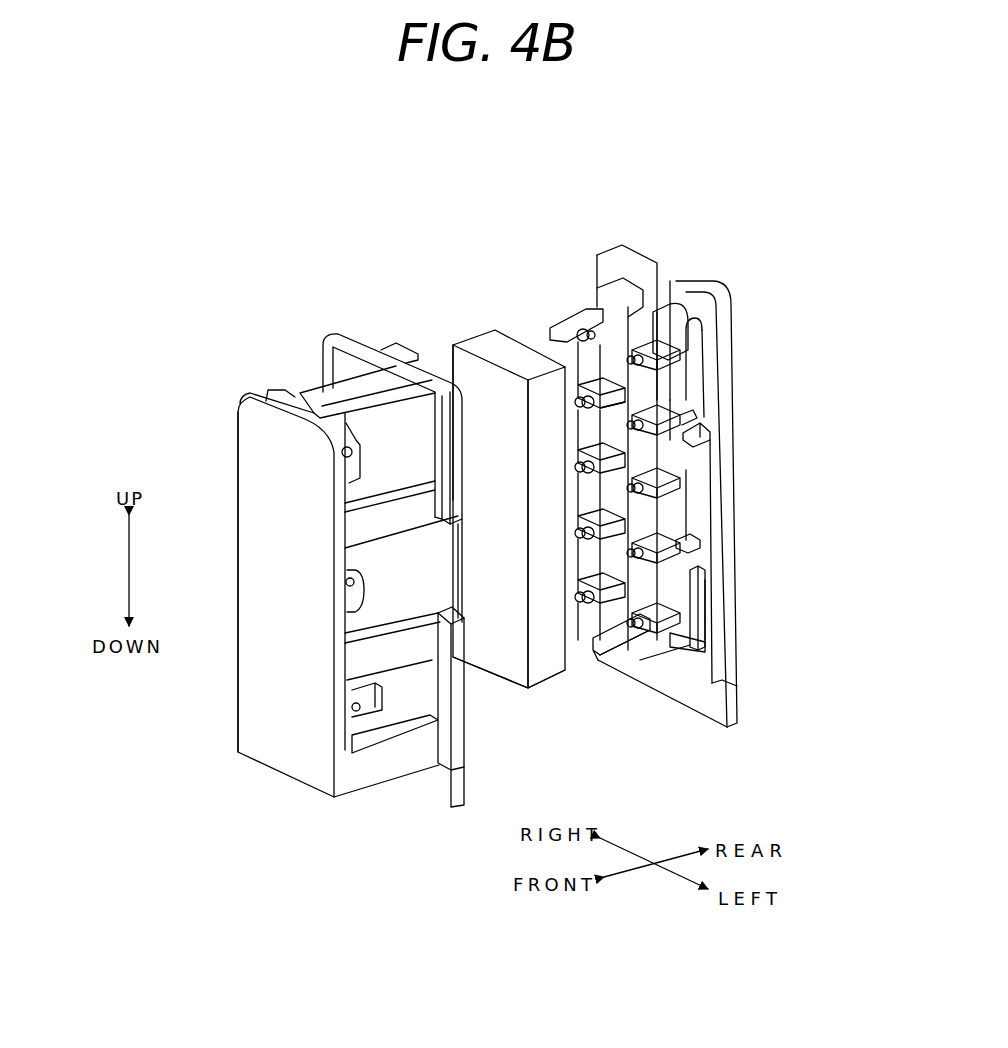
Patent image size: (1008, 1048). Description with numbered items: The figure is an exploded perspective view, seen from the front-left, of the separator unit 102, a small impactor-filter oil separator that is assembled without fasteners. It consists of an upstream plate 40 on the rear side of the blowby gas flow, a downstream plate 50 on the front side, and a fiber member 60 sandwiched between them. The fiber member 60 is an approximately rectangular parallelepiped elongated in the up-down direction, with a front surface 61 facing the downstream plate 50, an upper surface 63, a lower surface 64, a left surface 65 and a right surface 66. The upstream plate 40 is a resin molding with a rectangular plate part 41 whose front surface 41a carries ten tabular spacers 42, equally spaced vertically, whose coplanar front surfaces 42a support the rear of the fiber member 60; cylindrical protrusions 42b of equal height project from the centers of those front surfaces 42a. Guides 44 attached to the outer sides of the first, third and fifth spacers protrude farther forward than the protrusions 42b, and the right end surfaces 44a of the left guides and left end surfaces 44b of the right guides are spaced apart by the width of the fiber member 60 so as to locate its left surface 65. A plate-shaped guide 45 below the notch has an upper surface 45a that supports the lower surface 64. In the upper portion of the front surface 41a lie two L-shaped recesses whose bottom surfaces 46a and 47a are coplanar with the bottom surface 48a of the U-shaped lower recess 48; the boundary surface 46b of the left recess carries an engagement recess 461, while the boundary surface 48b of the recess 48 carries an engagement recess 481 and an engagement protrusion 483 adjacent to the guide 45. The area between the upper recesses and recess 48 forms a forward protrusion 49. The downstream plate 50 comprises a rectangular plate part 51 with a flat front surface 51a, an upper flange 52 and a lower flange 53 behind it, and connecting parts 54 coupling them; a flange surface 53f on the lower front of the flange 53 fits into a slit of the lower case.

The separator unit 102 is at (756, 200).
The upstream plate 40 is at (664, 262).
The plate part 41 is at (716, 724).
The front surface 41a is at (675, 385).
The spacers 42 is at (645, 480).
The front surfaces 42a is at (597, 402).
The cylindrical protrusions 42b is at (577, 403).
The guides 44 is at (645, 352).
The right end surfaces 44a is at (635, 483).
The left end surfaces 44b is at (572, 310).
The guide 45 is at (612, 650).
The upper surface 45a is at (608, 634).
The bottom surface 46a is at (713, 352).
The boundary surface 46b is at (695, 327).
The engagement recess 461 is at (690, 420).
The bottom surface 47a is at (598, 262).
The recess 48 is at (700, 682).
The bottom surface 48a is at (643, 668).
The boundary surface 48b is at (700, 613).
The engagement recess 481 is at (690, 550).
The engagement protrusion 483 is at (680, 648).
The protrusion 49 is at (693, 523).
The downstream plate 50 is at (348, 328).
The plate part 51 is at (310, 786).
The front surface 51a is at (258, 438).
The flange 52 is at (370, 346).
The flange 53 is at (428, 784).
The flange surface 53f is at (412, 780).
The connecting parts 54 is at (317, 402).
The fiber member 60 is at (492, 326).
The front surface 61 is at (497, 660).
The upper surface 63 is at (515, 352).
The lower surface 64 is at (550, 662).
The left surface 65 is at (572, 670).
The right surface 66 is at (452, 360).